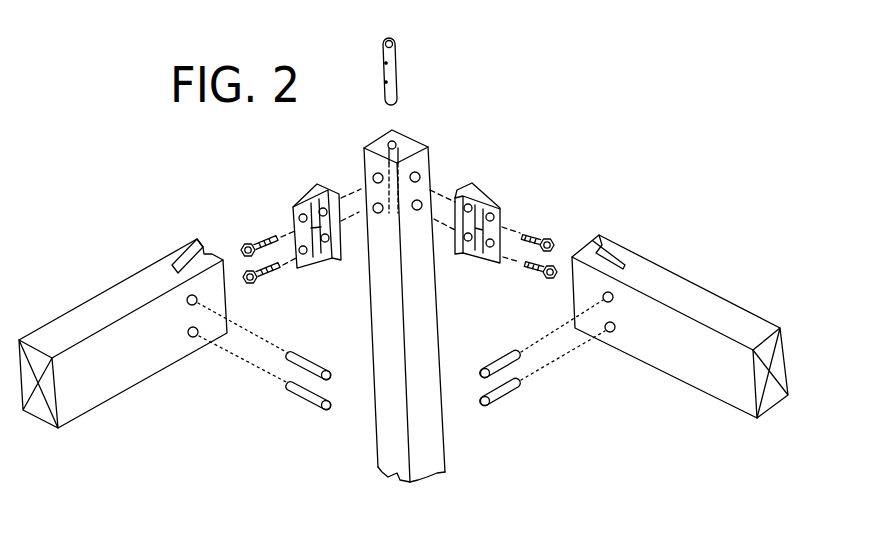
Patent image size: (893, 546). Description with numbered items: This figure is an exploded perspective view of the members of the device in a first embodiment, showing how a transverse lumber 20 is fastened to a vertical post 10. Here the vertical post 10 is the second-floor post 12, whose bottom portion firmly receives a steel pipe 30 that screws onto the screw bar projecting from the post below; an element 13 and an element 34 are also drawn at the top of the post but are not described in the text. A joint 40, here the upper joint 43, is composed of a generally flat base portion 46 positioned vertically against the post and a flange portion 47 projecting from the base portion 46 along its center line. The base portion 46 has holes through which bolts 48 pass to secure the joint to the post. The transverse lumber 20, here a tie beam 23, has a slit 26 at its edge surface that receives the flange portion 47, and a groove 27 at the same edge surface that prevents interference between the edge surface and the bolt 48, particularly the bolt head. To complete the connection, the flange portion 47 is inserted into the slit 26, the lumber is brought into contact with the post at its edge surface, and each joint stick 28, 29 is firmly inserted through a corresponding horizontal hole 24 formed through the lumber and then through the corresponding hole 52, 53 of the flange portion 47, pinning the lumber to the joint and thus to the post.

The vertical post 10 is at (339, 306).
The second-floor post 12 is at (339, 306).
The top bore of post 13 is at (410, 140).
The transverse lumber 20 is at (712, 326).
The tie beam 23 is at (715, 320).
The horizontal hole 24 is at (187, 300).
The slit 26 is at (123, 301).
The groove 27 is at (205, 246).
The joint stick 28 is at (307, 398).
The joint stick 29 is at (495, 365).
The steel pipe 30 is at (483, 59).
The locking pin 34 is at (397, 77).
The joint 40 is at (554, 213).
The upper joint 43 is at (554, 213).
The base portion 46 is at (320, 187).
The flange portion 47 is at (298, 212).
The bolt 48 is at (560, 224).
The hole 52 is at (482, 258).
The hole 53 is at (502, 210).